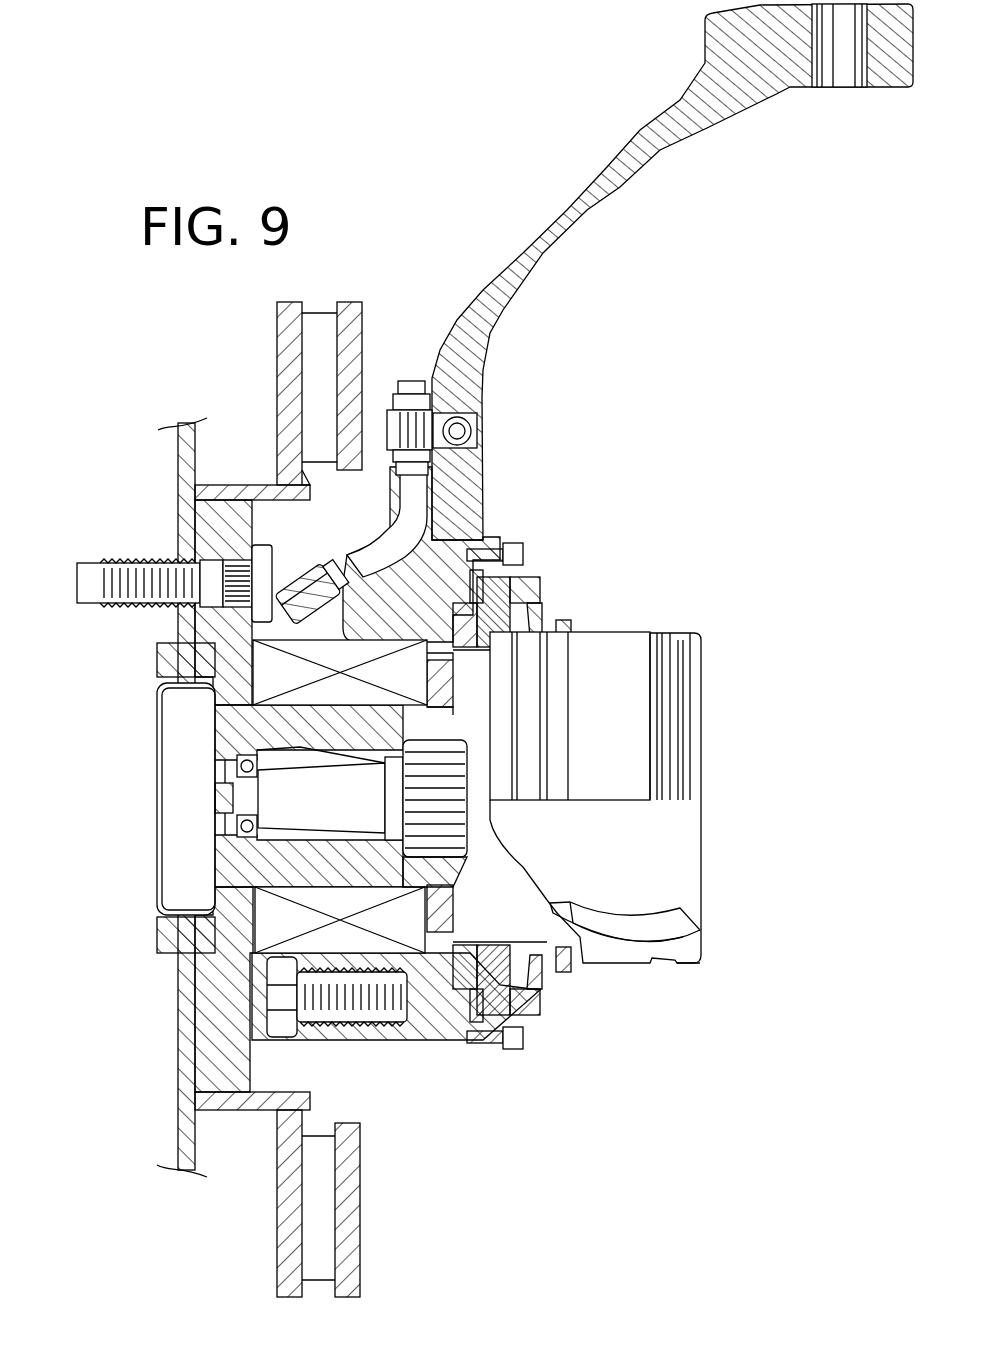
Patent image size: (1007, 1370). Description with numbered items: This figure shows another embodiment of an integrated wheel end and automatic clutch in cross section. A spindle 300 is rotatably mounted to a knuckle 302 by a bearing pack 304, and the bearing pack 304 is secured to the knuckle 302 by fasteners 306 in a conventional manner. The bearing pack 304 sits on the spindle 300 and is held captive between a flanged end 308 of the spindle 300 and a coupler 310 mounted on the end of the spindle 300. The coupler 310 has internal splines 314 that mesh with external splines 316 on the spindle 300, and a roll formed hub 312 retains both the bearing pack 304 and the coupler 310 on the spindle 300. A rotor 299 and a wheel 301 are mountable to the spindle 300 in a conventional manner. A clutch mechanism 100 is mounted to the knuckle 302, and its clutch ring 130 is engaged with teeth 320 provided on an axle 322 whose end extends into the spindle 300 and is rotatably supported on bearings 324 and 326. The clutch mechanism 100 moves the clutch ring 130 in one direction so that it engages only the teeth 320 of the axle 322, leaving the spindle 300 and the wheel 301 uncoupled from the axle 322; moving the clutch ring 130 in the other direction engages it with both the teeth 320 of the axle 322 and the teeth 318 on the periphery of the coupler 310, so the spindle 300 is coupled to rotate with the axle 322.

The clutch mechanism 100 is at (532, 528).
The clutch ring 130 is at (362, 533).
The rotor 299 is at (277, 354).
The spindle 300 is at (160, 690).
The wheel 301 is at (178, 478).
The knuckle 302 is at (520, 452).
The bearing pack 304 is at (177, 633).
The fasteners 306 is at (362, 1015).
The flanged end 308 is at (362, 798).
The coupler 310 is at (445, 657).
The roll formed hub 312 is at (455, 724).
The internal splines 314 is at (470, 744).
The external splines 316 is at (407, 720).
The teeth 318 is at (316, 590).
The teeth 320 is at (565, 632).
The axle 322 is at (636, 637).
The bearing 324 is at (445, 848).
The bearing 326 is at (225, 790).